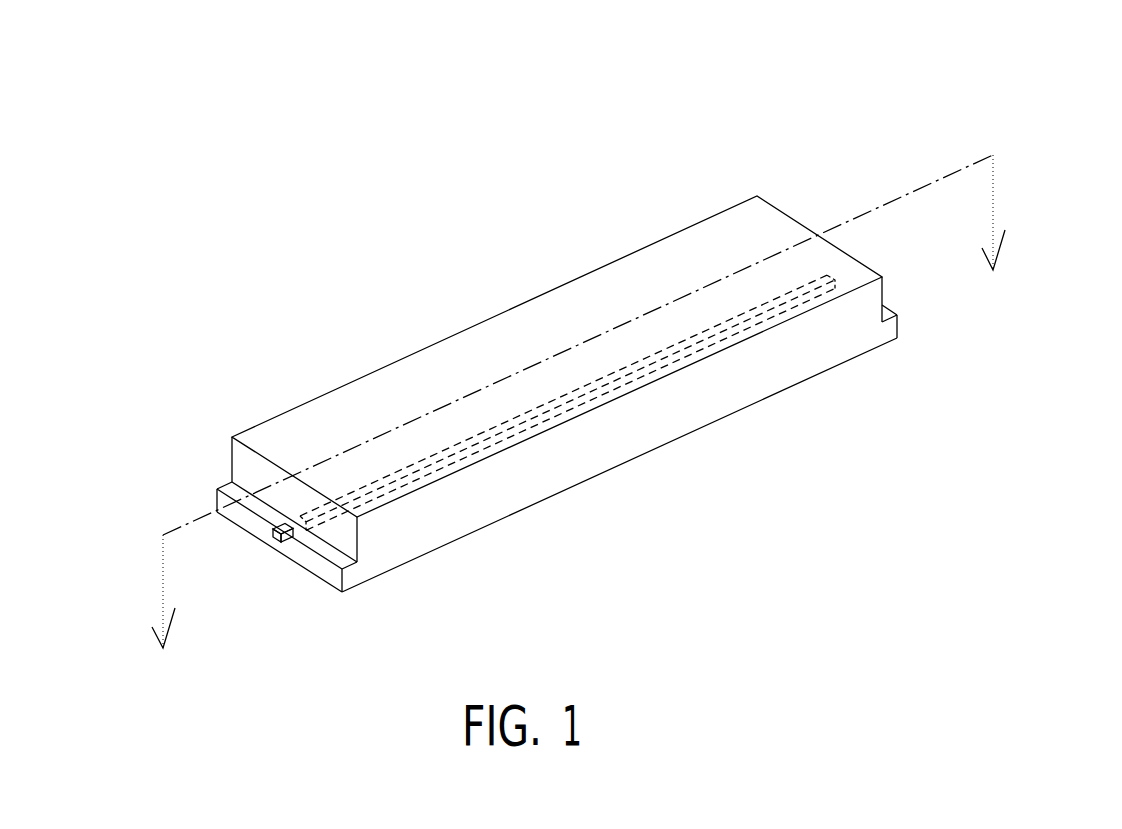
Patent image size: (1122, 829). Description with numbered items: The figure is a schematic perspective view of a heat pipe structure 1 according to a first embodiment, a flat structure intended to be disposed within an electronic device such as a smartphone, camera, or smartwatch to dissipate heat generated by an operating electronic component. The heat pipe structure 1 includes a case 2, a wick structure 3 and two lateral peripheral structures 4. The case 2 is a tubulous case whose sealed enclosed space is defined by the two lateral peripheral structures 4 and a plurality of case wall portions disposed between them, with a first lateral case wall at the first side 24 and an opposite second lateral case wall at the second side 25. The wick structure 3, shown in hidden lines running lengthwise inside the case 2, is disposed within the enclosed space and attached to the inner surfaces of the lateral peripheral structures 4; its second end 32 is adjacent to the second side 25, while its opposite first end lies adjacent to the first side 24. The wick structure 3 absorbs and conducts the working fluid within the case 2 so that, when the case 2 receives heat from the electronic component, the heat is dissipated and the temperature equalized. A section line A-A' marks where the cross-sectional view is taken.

The heat pipe structure 1 is at (1090, 83).
The case 2 is at (435, 333).
The wick structure 3 is at (528, 422).
The second end 32 is at (293, 540).
The lateral peripheral structure 4 is at (228, 484).
The first side 24 is at (905, 323).
The second side 25 is at (312, 573).